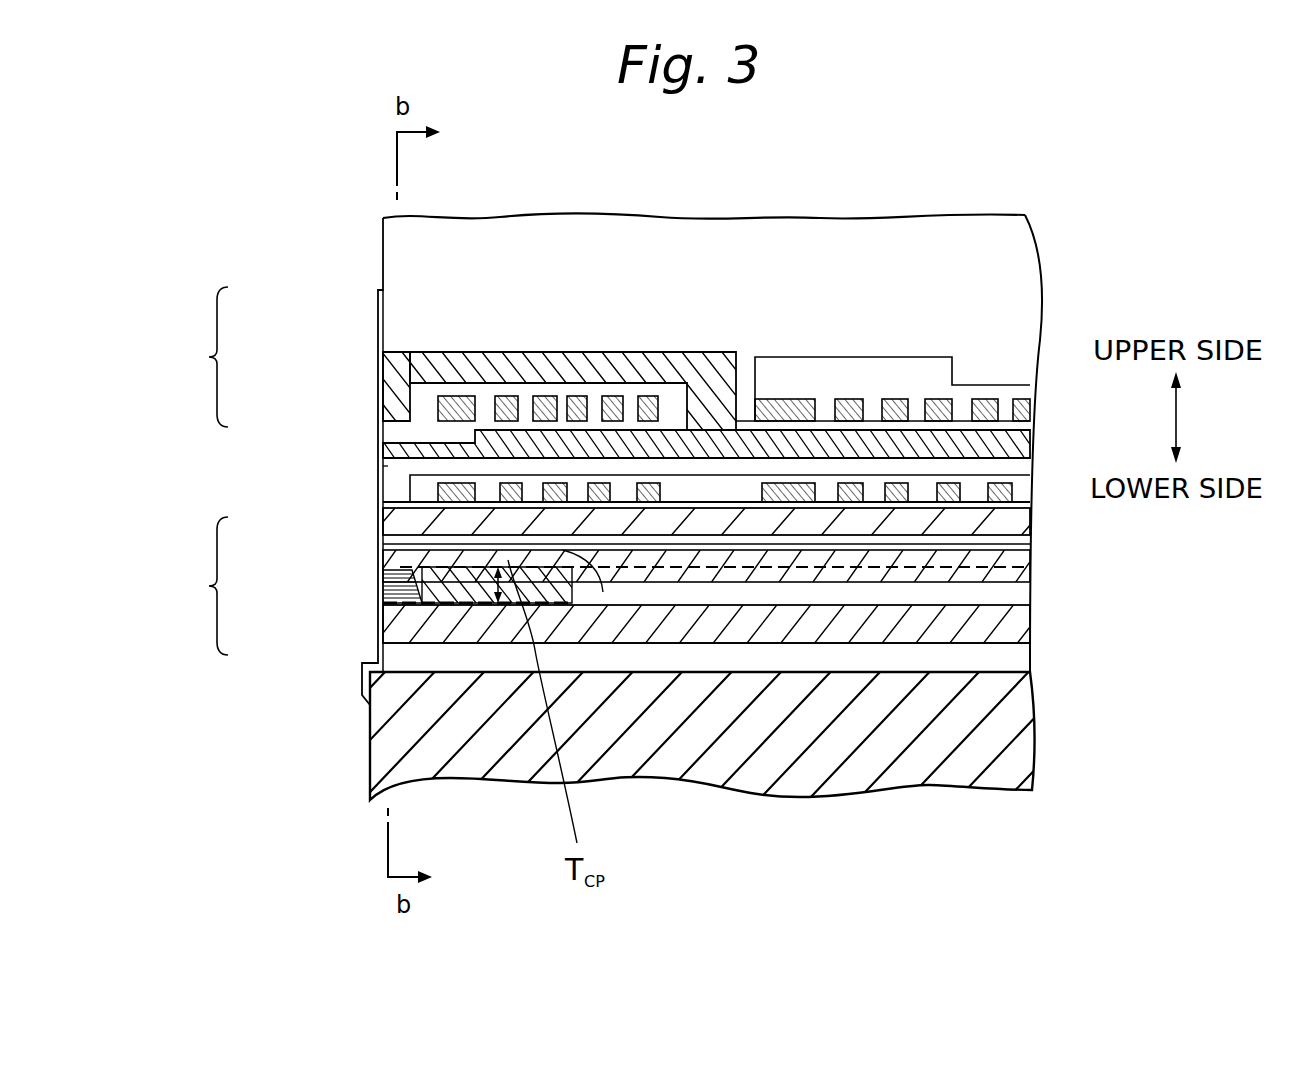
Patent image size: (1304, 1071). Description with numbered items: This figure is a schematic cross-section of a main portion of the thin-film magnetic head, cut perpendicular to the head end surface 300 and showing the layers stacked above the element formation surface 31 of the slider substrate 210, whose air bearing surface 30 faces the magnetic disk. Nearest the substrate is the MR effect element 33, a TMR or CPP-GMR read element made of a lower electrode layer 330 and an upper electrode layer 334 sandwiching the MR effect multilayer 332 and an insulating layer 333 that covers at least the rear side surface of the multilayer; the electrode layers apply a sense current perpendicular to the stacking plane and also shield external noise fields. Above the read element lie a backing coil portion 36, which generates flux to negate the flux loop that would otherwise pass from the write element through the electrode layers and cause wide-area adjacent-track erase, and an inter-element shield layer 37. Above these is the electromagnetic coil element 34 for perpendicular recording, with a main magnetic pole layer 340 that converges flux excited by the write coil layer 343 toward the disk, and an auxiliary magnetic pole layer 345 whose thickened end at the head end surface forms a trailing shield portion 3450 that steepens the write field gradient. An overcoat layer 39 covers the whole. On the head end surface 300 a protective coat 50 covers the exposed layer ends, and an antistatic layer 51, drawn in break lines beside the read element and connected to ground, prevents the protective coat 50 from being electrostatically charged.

The head end surface 300 is at (383, 253).
The overcoat layer 39 is at (690, 240).
The electromagnetic coil element 34 is at (199, 357).
The auxiliary magnetic pole layer 345 is at (520, 365).
The trailing shield portion 3450 is at (403, 373).
The write coil layer 343 is at (445, 405).
The main magnetic pole layer 340 is at (392, 446).
The protective coat 50 is at (383, 463).
The backing coil portion 36 is at (428, 487).
The inter-element shield layer 37 is at (395, 522).
The MR effect element 33 is at (199, 586).
The upper electrode layer 334 is at (380, 552).
The insulating layer 333 is at (380, 558).
The MR effect multilayer 332 is at (383, 590).
The lower electrode layer 330 is at (383, 622).
The element formation surface 31 is at (468, 672).
The antistatic layer 51 is at (553, 590).
The air bearing surface 30 is at (363, 722).
The slider substrate 210 is at (815, 765).